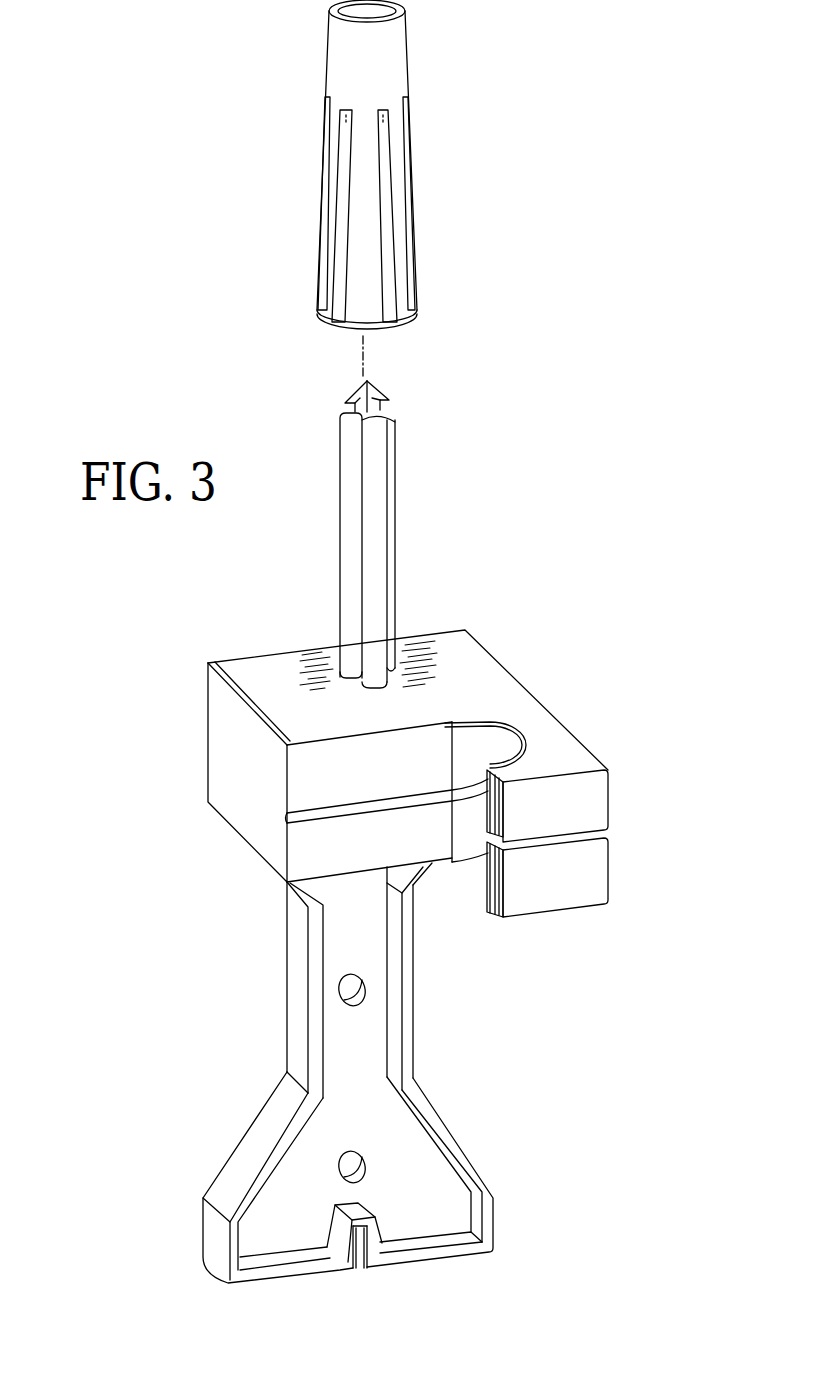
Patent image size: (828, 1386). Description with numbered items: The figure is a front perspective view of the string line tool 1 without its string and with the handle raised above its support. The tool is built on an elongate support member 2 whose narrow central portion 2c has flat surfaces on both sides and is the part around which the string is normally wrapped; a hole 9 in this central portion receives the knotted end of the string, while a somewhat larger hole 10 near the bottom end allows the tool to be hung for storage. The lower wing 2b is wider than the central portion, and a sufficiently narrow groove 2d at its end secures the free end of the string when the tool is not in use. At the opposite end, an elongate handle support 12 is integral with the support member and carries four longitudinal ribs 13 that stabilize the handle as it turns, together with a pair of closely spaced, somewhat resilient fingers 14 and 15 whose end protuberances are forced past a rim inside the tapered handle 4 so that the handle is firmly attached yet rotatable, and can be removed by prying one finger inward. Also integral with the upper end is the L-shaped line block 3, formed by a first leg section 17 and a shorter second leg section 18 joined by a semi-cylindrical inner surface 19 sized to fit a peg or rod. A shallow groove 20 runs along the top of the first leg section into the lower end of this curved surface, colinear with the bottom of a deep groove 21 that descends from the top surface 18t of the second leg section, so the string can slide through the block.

The string line tool 1 is at (119, 1013).
The support member 2 is at (380, 1097).
The wing 2b is at (497, 1222).
The central portion 2c is at (362, 942).
The groove 2d is at (360, 1262).
The line block 3 is at (390, 749).
The handle 4 is at (400, 197).
The hole 9 is at (338, 993).
The hole 10 is at (347, 1167).
The handle support 12 is at (370, 550).
The ribs 13 is at (350, 580).
The finger 14 is at (380, 397).
The finger 15 is at (357, 392).
The first leg section 17 is at (253, 765).
The second leg section 18 is at (584, 759).
The top surface 18t is at (577, 798).
The semi-cylindrical inner surface 19 is at (490, 722).
The shallow groove 20 is at (312, 818).
The deep groove 21 is at (572, 845).